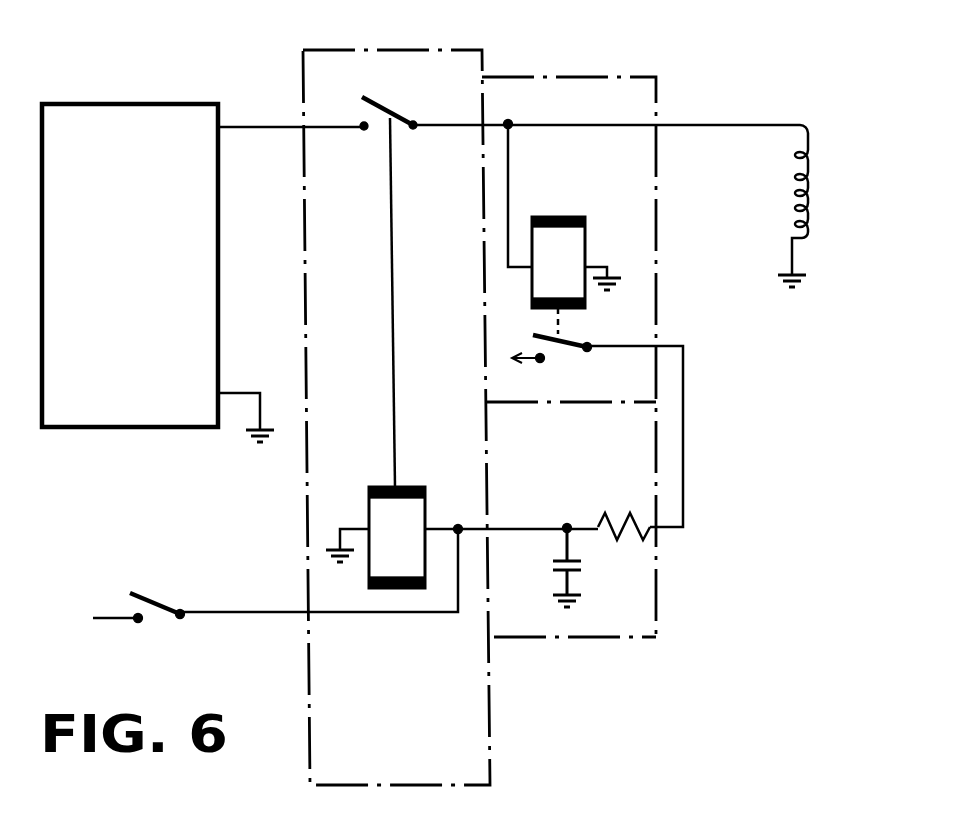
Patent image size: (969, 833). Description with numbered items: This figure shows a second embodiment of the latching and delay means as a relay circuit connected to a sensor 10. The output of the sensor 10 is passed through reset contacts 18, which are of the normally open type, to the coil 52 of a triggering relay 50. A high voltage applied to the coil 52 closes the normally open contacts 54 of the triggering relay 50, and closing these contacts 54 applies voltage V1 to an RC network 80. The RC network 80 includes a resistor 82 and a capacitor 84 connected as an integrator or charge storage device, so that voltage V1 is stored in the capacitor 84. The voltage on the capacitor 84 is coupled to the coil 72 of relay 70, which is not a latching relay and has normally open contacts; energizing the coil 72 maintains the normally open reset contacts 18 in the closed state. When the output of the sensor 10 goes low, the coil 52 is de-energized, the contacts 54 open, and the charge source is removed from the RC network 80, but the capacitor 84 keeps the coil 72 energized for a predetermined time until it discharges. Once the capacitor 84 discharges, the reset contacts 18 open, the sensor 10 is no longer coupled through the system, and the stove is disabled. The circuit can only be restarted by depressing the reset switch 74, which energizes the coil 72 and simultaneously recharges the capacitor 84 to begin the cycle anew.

The sensor 10 is at (175, 102).
The reset contacts 18 is at (400, 117).
The triggering relay 50 is at (657, 77).
The coil 52 is at (558, 262).
The contacts 54 is at (548, 346).
The relay 70 is at (449, 28).
The coil 72 is at (397, 537).
The reset switch 74 is at (150, 616).
The RC network 80 is at (548, 640).
The resistor 82 is at (624, 536).
The capacitor 84 is at (558, 566).